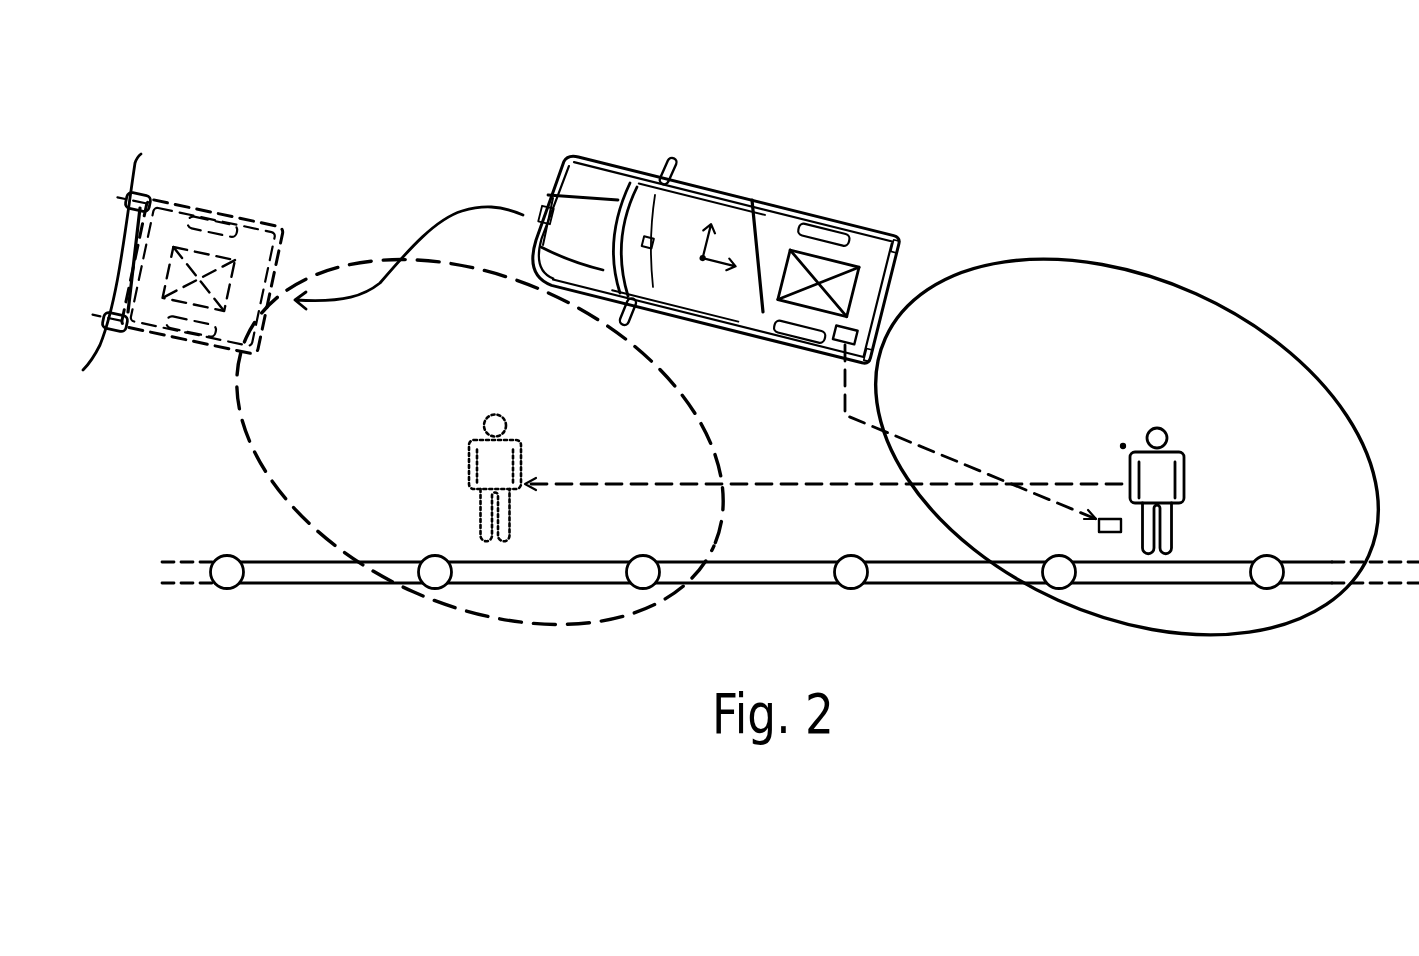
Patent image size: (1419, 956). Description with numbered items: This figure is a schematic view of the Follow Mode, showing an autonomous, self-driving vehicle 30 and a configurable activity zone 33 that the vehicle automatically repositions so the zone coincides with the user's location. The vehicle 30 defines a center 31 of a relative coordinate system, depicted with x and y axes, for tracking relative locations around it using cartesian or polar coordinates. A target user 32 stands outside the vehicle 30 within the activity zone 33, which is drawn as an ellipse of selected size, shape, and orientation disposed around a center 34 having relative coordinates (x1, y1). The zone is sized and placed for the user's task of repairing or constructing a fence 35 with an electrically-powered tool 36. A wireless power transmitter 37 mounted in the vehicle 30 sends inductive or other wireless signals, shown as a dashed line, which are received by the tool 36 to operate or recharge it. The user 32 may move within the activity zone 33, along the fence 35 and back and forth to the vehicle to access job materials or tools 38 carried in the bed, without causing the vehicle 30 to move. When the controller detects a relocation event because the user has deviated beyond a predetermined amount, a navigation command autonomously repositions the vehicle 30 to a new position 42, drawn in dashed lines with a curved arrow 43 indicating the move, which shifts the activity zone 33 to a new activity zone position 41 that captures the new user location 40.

The vehicle 30 is at (790, 182).
The center 31 is at (702, 262).
The target user 32 is at (1185, 473).
The activity zone 33 is at (1173, 285).
The center 34 is at (1123, 446).
The fence 35 is at (927, 603).
The electrically-powered tool 36 is at (1104, 534).
The wireless power transmitter 37 is at (838, 343).
The tools 38 is at (837, 267).
The new user location 40 is at (470, 452).
The new activity zone position 41 is at (457, 610).
The new position 42 is at (198, 202).
The transformation arrow 43 is at (445, 215).